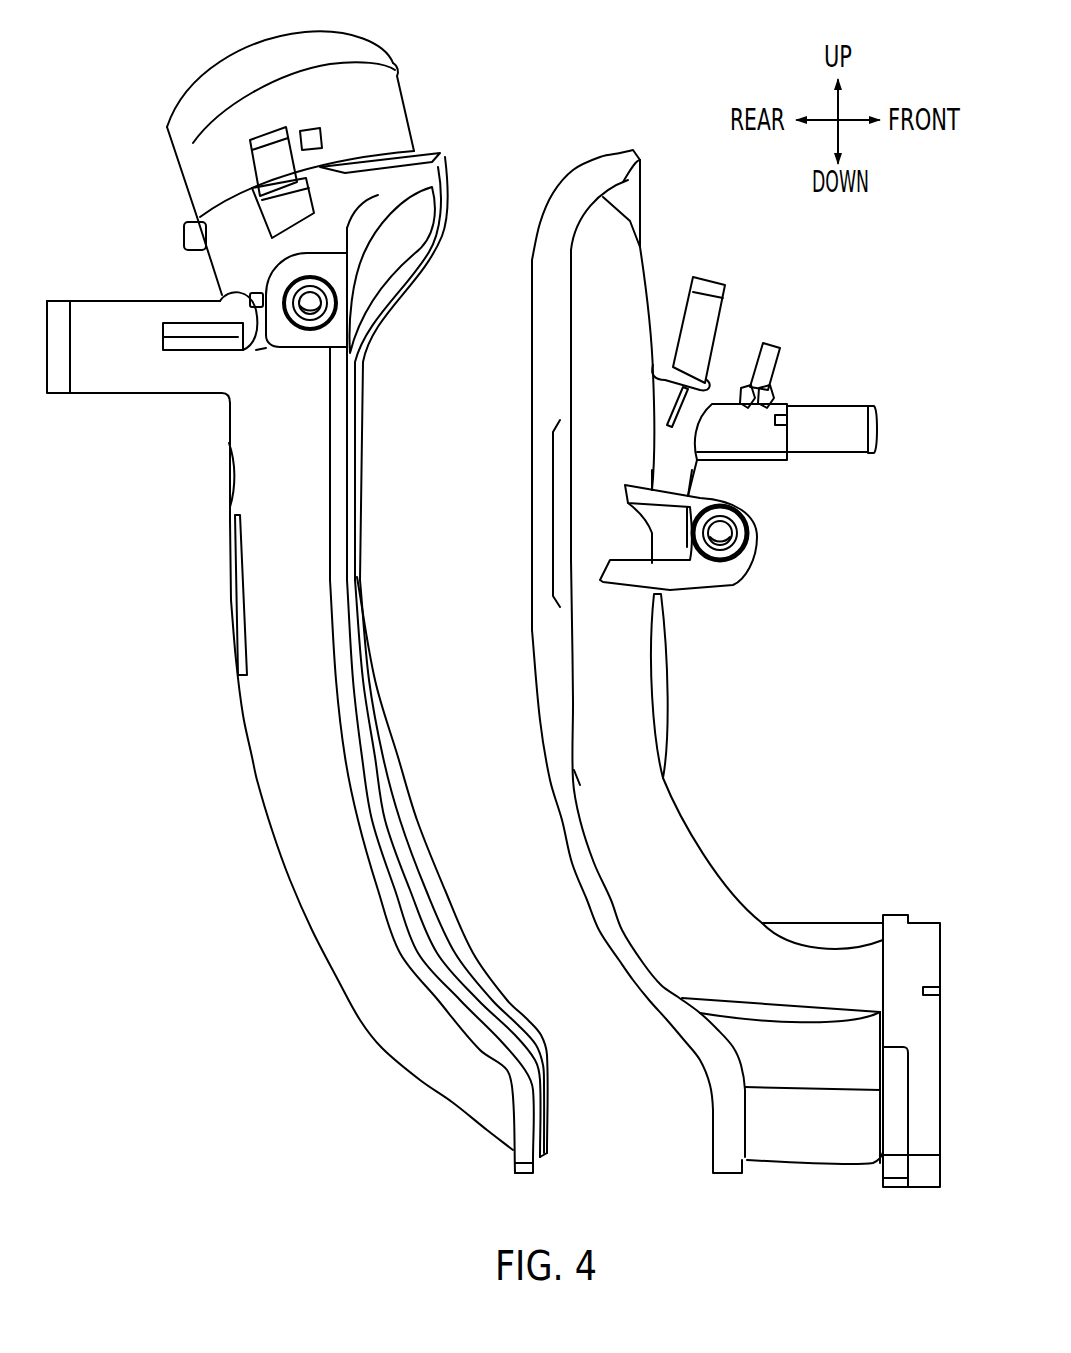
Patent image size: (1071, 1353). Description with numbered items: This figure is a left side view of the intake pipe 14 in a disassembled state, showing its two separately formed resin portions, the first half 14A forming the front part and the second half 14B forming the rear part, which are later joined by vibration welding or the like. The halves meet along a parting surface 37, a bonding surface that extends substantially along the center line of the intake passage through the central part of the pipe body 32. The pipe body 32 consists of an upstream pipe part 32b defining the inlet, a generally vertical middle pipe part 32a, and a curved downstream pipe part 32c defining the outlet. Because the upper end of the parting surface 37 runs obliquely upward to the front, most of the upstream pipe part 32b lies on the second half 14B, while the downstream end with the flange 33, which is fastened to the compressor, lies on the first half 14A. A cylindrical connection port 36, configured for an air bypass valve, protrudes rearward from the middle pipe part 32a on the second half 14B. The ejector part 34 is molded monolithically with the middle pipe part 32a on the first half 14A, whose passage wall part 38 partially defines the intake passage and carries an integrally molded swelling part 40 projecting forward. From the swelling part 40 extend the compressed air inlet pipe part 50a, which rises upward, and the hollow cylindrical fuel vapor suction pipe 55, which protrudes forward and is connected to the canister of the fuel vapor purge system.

The intake pipe 14 is at (612, 103).
The first half 14A is at (660, 685).
The second half 14B is at (241, 720).
The pipe body 32 is at (227, 641).
The middle pipe part 32a is at (253, 480).
The upstream pipe part 32b is at (193, 143).
The downstream pipe part 32c is at (415, 1062).
The flange 33 is at (920, 930).
The ejector part 34 is at (747, 338).
The connection port 36 is at (117, 313).
The parting surface 37 is at (362, 483).
The passage wall part 38 is at (618, 750).
The swelling part 40 is at (695, 480).
The compressed air inlet pipe part 50a is at (703, 303).
The fuel vapor suction pipe 55 is at (827, 403).